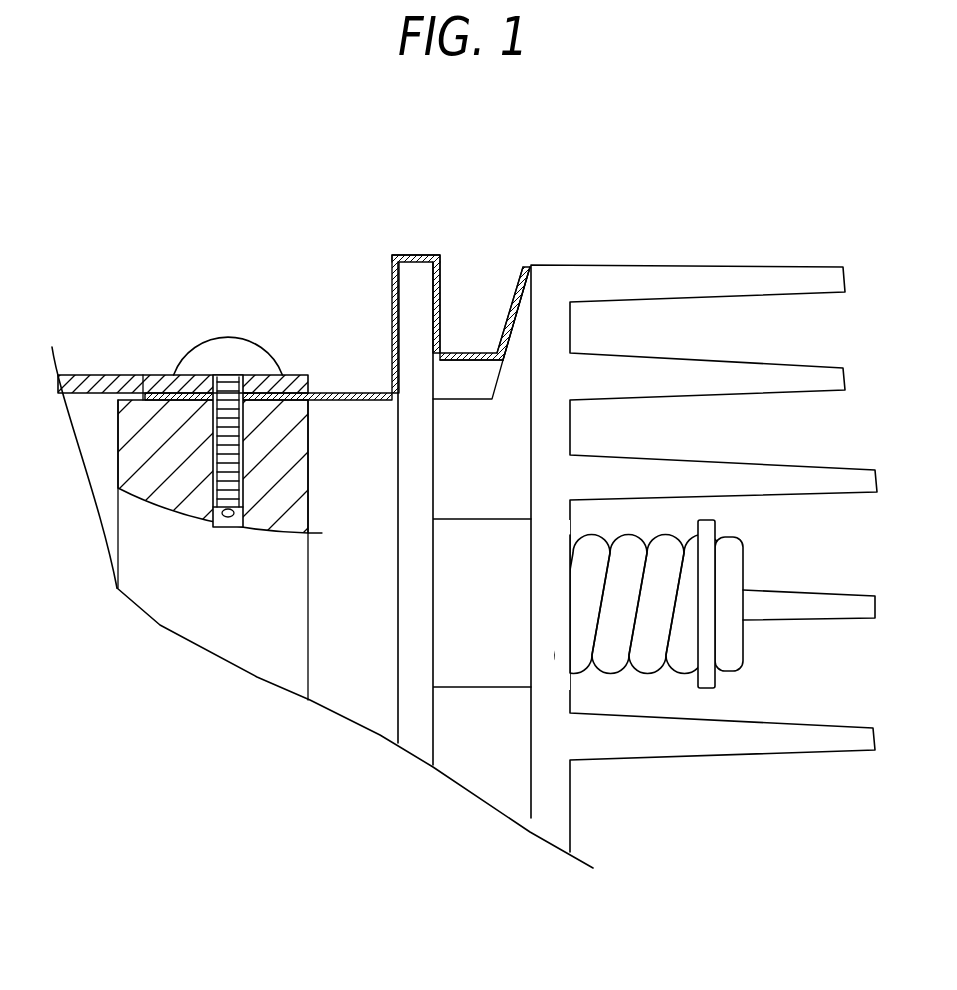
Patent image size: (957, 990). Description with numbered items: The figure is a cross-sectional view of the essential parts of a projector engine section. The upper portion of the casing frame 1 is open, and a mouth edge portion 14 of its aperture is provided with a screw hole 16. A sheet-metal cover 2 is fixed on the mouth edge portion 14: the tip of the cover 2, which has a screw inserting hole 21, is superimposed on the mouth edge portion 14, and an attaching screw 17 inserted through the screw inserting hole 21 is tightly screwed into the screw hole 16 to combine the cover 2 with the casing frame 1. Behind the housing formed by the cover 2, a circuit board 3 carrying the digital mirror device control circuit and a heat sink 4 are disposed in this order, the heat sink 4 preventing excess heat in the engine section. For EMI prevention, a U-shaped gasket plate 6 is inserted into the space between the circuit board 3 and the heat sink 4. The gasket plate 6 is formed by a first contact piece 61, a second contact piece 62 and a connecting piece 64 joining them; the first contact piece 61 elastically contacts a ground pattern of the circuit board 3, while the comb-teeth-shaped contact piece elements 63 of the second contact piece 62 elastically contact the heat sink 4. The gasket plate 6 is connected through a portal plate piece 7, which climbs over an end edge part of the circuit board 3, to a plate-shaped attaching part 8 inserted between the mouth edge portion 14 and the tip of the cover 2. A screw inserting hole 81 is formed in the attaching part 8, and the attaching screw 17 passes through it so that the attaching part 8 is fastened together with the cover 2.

The casing frame 1 is at (258, 663).
The cover 2 is at (90, 375).
The circuit board 3 is at (412, 292).
The heat sink 4 is at (720, 270).
The gasket plate 6 is at (470, 370).
The portal plate piece 7 is at (415, 253).
The attaching part 8 is at (360, 403).
The mouth edge portion 14 is at (142, 377).
The screw hole 16 is at (227, 523).
The attaching screw 17 is at (250, 345).
The screw inserting hole 21 is at (208, 375).
The first contact piece 61 is at (442, 278).
The second contact piece 62 is at (553, 268).
The contact piece element 63 is at (520, 287).
The connecting piece 64 is at (466, 354).
The screw inserting hole 81 is at (253, 403).